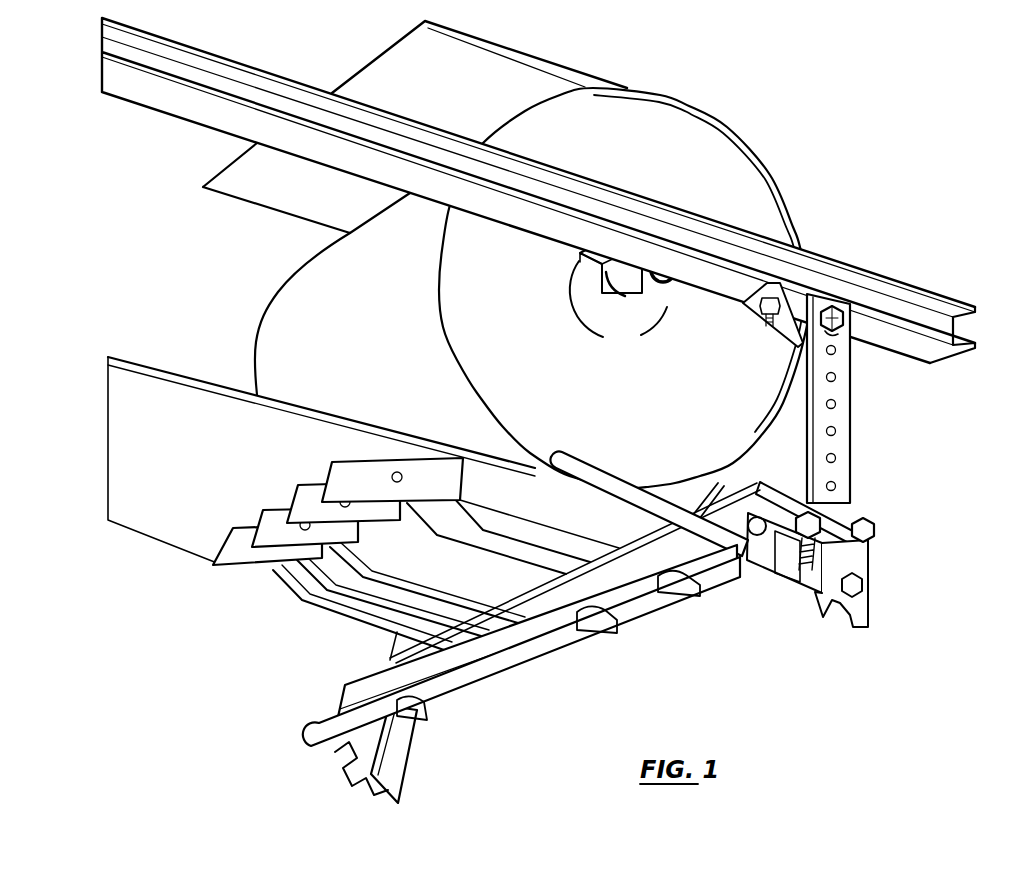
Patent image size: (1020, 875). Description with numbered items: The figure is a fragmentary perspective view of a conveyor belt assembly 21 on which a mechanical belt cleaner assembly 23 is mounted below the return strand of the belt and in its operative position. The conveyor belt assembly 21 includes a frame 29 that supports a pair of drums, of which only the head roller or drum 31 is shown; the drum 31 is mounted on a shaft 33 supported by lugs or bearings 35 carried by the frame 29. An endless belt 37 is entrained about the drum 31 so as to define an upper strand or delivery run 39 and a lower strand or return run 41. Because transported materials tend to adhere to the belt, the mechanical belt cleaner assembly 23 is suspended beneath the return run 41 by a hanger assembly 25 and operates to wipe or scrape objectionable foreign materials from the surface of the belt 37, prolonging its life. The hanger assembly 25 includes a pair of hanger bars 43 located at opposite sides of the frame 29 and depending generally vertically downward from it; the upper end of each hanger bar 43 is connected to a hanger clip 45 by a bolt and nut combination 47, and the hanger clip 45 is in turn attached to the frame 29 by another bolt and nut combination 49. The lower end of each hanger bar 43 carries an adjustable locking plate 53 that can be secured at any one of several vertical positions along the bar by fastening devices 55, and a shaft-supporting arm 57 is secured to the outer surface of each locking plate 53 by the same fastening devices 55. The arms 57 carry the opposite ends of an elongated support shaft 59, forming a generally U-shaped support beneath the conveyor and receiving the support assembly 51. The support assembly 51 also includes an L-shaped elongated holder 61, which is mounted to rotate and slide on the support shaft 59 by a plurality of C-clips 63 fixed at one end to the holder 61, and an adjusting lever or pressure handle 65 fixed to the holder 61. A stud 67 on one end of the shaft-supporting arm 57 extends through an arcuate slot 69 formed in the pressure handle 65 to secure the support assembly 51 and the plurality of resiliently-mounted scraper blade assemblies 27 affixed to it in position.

The conveyor belt assembly 21 is at (790, 167).
The mechanical belt cleaner assembly 23 is at (771, 643).
The hanger assembly 25 is at (630, 548).
The scraper blade assemblies 27 is at (296, 633).
The frame 29 is at (870, 273).
The head roller or drum 31 is at (354, 334).
The shaft 33 is at (632, 306).
The lugs or bearings 35 is at (668, 283).
The endless belt 37 is at (736, 122).
The upper strand or delivery run 39 is at (502, 50).
The lower strand or return run 41 is at (128, 530).
The hanger bars 43 is at (842, 400).
The hanger clip 45 is at (847, 318).
The bolt and nut combination 47 is at (840, 333).
The bolt and nut combination 49 is at (766, 326).
The support assembly 51 is at (527, 668).
The adjustable locking plate 53 is at (866, 607).
The fastening devices 55 is at (878, 527).
The shaft-supporting arm 57 is at (850, 505).
The support shaft 59 is at (641, 606).
The L-shaped elongated support member or holder 61 is at (480, 642).
The C-clips 63 is at (427, 718).
The adjusting lever or pressure handle 65 is at (746, 565).
The stud 67 is at (824, 538).
The arcuate slot or opening 69 is at (818, 557).